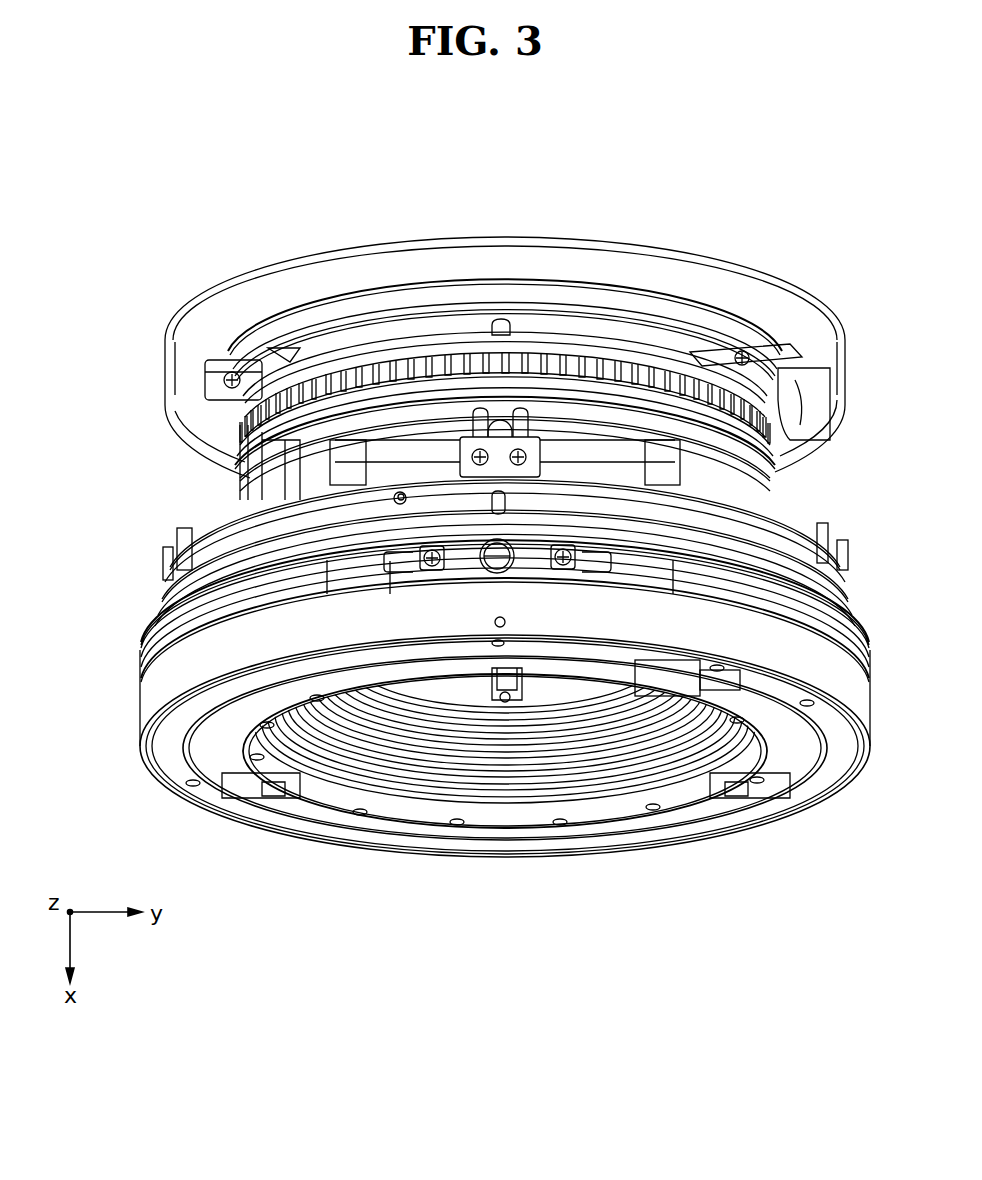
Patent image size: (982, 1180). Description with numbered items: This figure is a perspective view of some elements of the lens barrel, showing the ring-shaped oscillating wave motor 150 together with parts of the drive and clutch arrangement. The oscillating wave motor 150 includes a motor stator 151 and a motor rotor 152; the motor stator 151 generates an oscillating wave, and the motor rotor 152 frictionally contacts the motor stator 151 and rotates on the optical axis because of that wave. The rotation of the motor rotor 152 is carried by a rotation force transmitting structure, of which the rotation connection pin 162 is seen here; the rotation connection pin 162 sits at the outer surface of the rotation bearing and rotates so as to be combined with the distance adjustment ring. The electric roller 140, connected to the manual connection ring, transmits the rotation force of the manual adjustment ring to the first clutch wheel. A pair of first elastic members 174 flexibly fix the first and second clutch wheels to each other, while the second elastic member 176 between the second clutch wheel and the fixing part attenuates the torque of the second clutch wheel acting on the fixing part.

The electric roller 140 is at (493, 573).
The ring-shaped oscillating wave motor 150 is at (505, 292).
The motor stator 151 is at (622, 352).
The motor rotor 152 is at (556, 388).
The rotation connection pin 162 is at (498, 420).
The first elastic members 174 is at (418, 567).
The second elastic member 176 is at (418, 450).